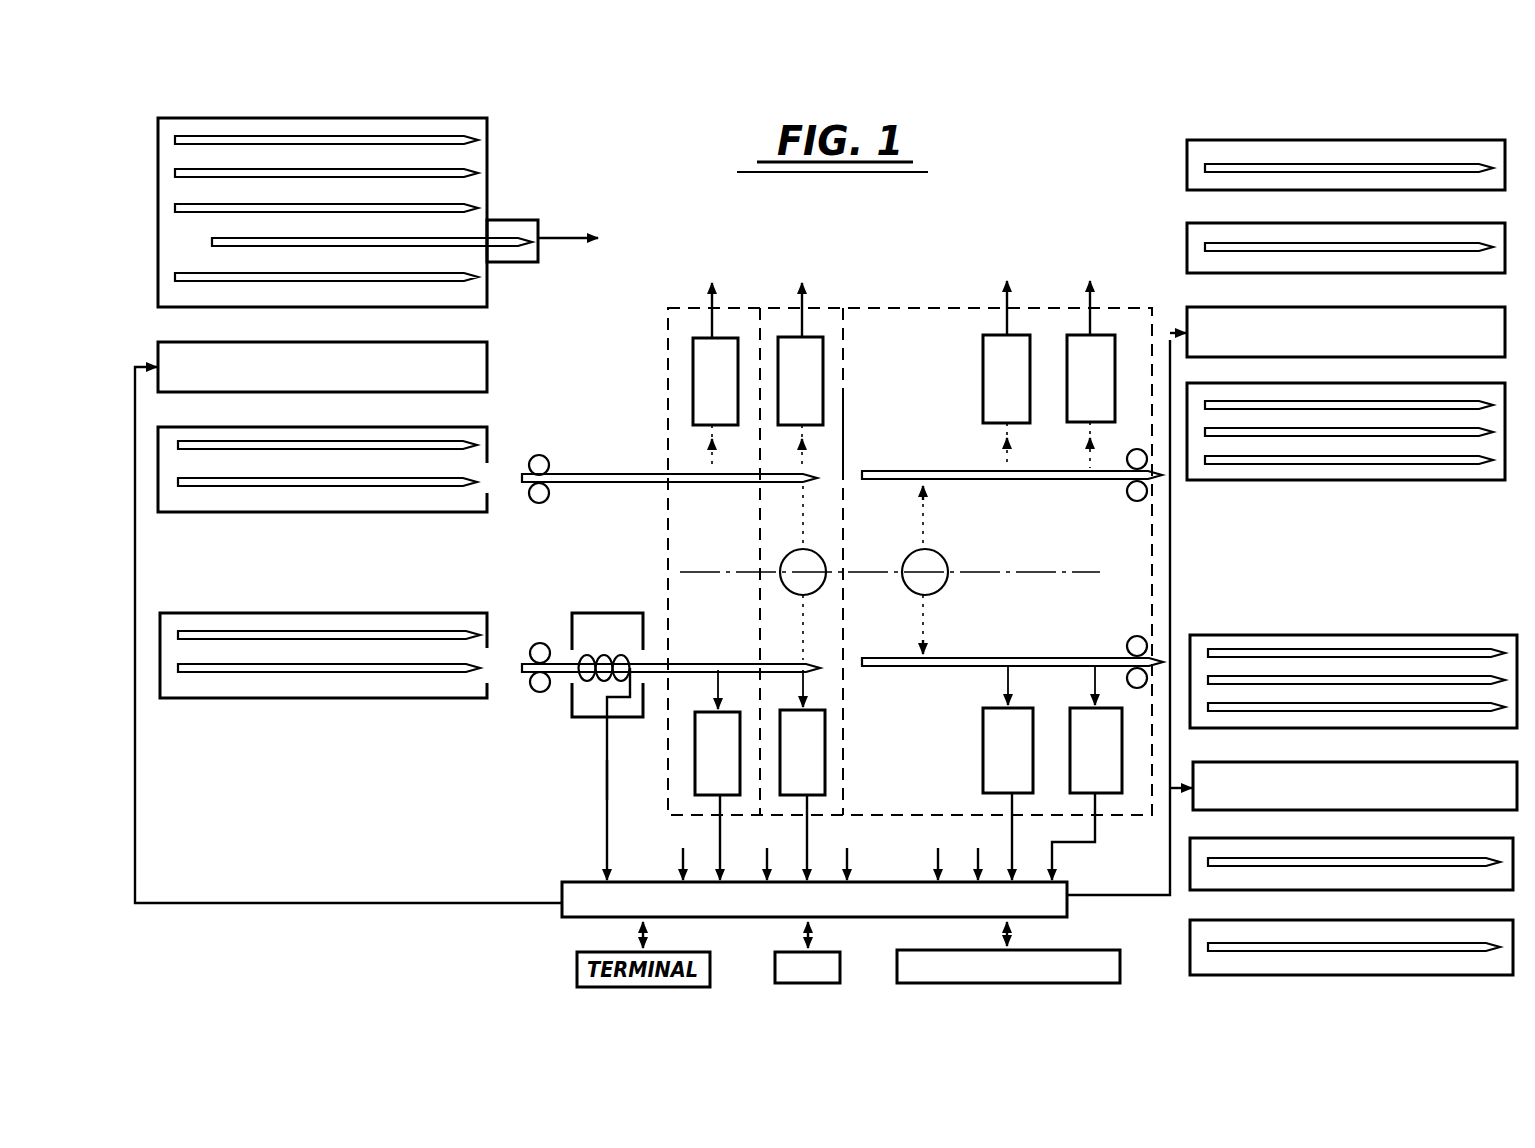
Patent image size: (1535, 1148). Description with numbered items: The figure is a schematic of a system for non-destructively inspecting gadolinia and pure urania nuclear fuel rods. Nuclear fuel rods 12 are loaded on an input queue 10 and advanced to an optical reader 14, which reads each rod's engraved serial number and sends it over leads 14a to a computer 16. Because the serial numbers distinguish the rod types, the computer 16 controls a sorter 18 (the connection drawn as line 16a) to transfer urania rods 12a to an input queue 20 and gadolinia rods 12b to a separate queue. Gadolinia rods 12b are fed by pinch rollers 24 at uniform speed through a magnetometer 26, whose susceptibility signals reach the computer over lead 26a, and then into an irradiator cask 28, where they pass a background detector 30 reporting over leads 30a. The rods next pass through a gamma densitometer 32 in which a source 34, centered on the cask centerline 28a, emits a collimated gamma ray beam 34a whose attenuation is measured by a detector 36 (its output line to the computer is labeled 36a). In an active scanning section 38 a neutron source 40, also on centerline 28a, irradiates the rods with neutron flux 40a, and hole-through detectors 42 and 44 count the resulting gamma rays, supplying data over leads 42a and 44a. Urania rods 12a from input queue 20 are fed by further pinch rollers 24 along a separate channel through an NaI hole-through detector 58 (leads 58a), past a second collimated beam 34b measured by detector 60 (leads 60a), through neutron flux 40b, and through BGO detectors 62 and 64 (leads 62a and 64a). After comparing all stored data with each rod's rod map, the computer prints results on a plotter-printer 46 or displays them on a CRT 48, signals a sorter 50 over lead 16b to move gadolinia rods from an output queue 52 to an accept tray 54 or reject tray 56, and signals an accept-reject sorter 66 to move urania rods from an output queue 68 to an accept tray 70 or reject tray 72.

The input queue 10 is at (487, 138).
The nuclear fuel rods 12 is at (178, 180).
The urania rods 12a is at (470, 485).
The gadolinia rods 12b is at (355, 664).
The optical reader 14 is at (515, 220).
The leads 14a is at (572, 240).
The computer 16 is at (927, 909).
The computer output line to sorter 18 16a is at (392, 903).
The lead 16b is at (1113, 903).
The sorter 18 is at (425, 382).
The input queue 20 is at (327, 512).
The pinch rollers 24 is at (552, 493).
The magnetometer 26 is at (598, 613).
The lead 26a is at (607, 798).
The irradiator cask 28 is at (843, 308).
The centerline 28a is at (1000, 572).
The background detector 30 is at (697, 731).
The leads 30a is at (720, 812).
The gamma densitometer 32 is at (848, 440).
The source 34 is at (791, 557).
The collimated gamma ray beam 34a is at (804, 645).
The collimated gamma ray beam 34b is at (803, 500).
The detector 36 is at (825, 739).
The detector signal line 36a is at (808, 838).
The active scanning section 38 is at (920, 768).
The neutron source 40 is at (916, 558).
The neutron flux 40a is at (925, 622).
The neutron flux 40b is at (925, 515).
The hole-through detector 42 is at (983, 739).
The leads 42a is at (1012, 810).
The hole-through detector 44 is at (1070, 736).
The leads 44a is at (1097, 825).
The plotter-printer 46 is at (897, 965).
The CRT 48 is at (775, 966).
The sorter 50 is at (1448, 802).
The output queue 52 is at (1308, 635).
The gadolinia rod accept tray 54 is at (1262, 840).
The gadolinia rod reject tray 56 is at (1295, 926).
The NaI hole-through detector 58 is at (693, 372).
The leads 58a is at (718, 303).
The detector 60 is at (823, 372).
The leads 60a is at (806, 303).
The BGO hole-through detector 62 is at (983, 366).
The leads 62a is at (1011, 303).
The BGO hole-through detector 64 is at (1115, 383).
The leads 64a is at (1094, 303).
The accept-reject sorter 66 is at (1365, 308).
The output queue 68 is at (1345, 480).
The urania rod accept tray 70 is at (1295, 224).
The urania rod reject tray 72 is at (1313, 141).